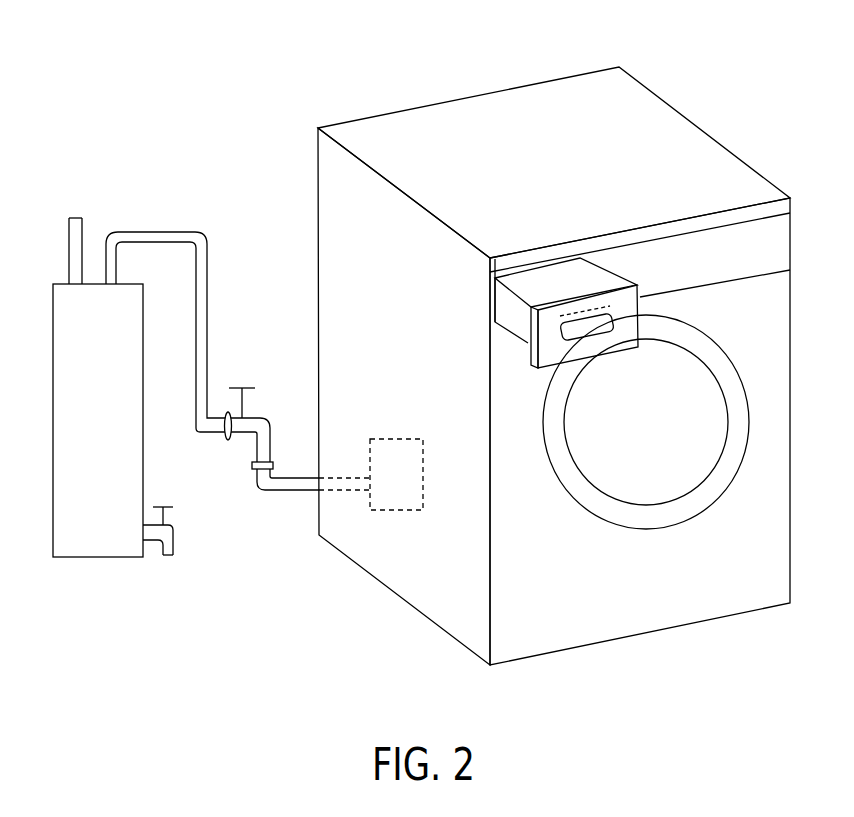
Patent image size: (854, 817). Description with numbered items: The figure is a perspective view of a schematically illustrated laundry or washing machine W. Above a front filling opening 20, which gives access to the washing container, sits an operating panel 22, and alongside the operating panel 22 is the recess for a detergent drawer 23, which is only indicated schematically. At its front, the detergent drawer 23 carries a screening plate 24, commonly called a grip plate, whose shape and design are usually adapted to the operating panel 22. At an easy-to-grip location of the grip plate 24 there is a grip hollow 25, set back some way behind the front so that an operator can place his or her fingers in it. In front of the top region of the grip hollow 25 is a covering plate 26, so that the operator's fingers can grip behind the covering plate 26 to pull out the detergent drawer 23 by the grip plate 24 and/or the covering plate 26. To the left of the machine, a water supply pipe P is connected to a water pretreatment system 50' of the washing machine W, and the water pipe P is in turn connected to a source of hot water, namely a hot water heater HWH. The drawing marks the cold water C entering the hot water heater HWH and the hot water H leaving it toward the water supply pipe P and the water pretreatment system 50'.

The washing machine W is at (682, 87).
The front filling opening 20 is at (628, 457).
The operating panel 22 is at (717, 240).
The detergent drawer 23 is at (550, 288).
The screening plate 24 is at (628, 302).
The grip hollow 25 is at (602, 330).
The covering plate 26 is at (593, 308).
The water pretreatment system 50' is at (396, 439).
The water supply pipe P is at (292, 486).
The hot water H is at (164, 223).
The cold water C is at (91, 212).
The hot water heater HWH is at (113, 420).